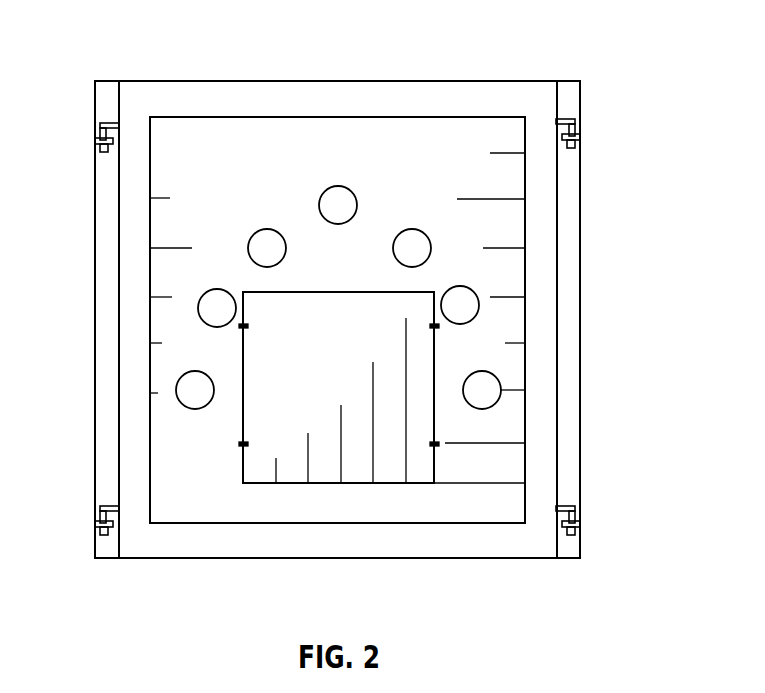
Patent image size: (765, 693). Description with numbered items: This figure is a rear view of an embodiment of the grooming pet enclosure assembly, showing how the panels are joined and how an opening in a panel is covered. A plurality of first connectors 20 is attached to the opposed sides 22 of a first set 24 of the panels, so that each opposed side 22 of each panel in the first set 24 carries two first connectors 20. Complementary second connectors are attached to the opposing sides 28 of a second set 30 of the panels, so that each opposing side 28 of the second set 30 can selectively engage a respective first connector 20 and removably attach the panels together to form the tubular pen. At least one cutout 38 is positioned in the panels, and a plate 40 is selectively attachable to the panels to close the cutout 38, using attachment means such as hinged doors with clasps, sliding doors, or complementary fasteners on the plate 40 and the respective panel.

The first connector 20 is at (577, 128).
The opposed side 22 is at (119, 486).
The first set of panels 24 is at (178, 533).
The opposing side 28 is at (105, 92).
The second set of panels 30 is at (119, 250).
The cutout 38 is at (321, 395).
The plate 40 is at (275, 335).